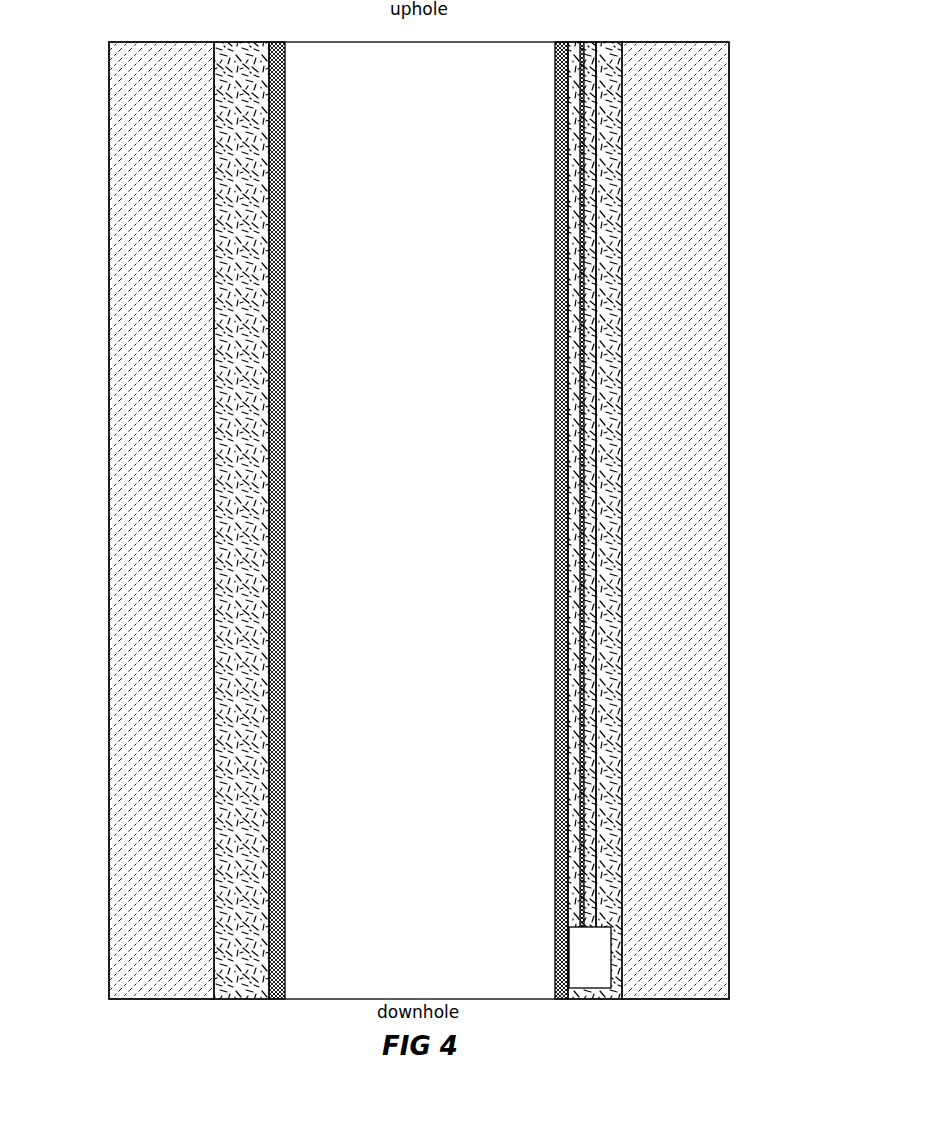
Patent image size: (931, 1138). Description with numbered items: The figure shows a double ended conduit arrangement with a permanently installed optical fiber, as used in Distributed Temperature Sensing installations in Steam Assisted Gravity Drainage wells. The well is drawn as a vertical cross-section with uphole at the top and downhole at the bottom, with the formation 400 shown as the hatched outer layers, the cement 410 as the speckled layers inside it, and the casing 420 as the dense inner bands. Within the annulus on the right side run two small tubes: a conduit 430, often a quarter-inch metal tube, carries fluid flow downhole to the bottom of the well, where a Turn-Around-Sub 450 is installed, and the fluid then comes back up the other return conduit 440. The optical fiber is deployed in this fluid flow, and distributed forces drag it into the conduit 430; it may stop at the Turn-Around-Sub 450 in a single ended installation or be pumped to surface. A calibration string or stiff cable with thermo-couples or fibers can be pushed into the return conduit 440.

The formation 400 is at (167, 497).
The cement 410 is at (255, 312).
The casing 420 is at (270, 103).
The conduit 430 is at (597, 170).
The return conduit 440 is at (597, 389).
The Turn-Around-Sub 450 is at (590, 953).